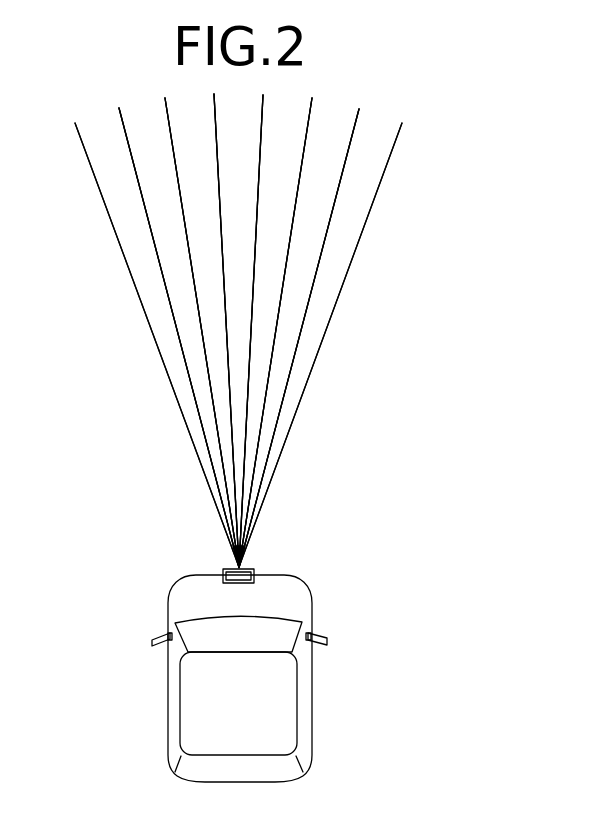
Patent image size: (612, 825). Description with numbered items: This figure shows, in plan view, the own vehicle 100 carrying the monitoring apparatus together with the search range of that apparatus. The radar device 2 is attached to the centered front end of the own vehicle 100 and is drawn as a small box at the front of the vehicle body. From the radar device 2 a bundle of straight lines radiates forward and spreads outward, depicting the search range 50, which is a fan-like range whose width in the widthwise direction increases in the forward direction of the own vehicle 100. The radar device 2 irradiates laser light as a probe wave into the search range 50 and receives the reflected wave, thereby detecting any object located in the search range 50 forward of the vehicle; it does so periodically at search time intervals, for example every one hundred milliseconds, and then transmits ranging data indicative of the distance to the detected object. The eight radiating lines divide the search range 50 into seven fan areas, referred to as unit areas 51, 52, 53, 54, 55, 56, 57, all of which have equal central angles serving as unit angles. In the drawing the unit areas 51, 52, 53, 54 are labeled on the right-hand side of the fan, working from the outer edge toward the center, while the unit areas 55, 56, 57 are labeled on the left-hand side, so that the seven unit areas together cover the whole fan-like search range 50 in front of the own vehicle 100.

The radar device 2 is at (255, 566).
The own vehicle 100 is at (303, 692).
The search range 50 is at (282, 453).
The unit area 51 is at (313, 335).
The unit area 52 is at (300, 275).
The unit area 53 is at (277, 222).
The unit area 54 is at (242, 162).
The unit area 55 is at (195, 182).
The unit area 56 is at (172, 250).
The unit area 57 is at (165, 318).